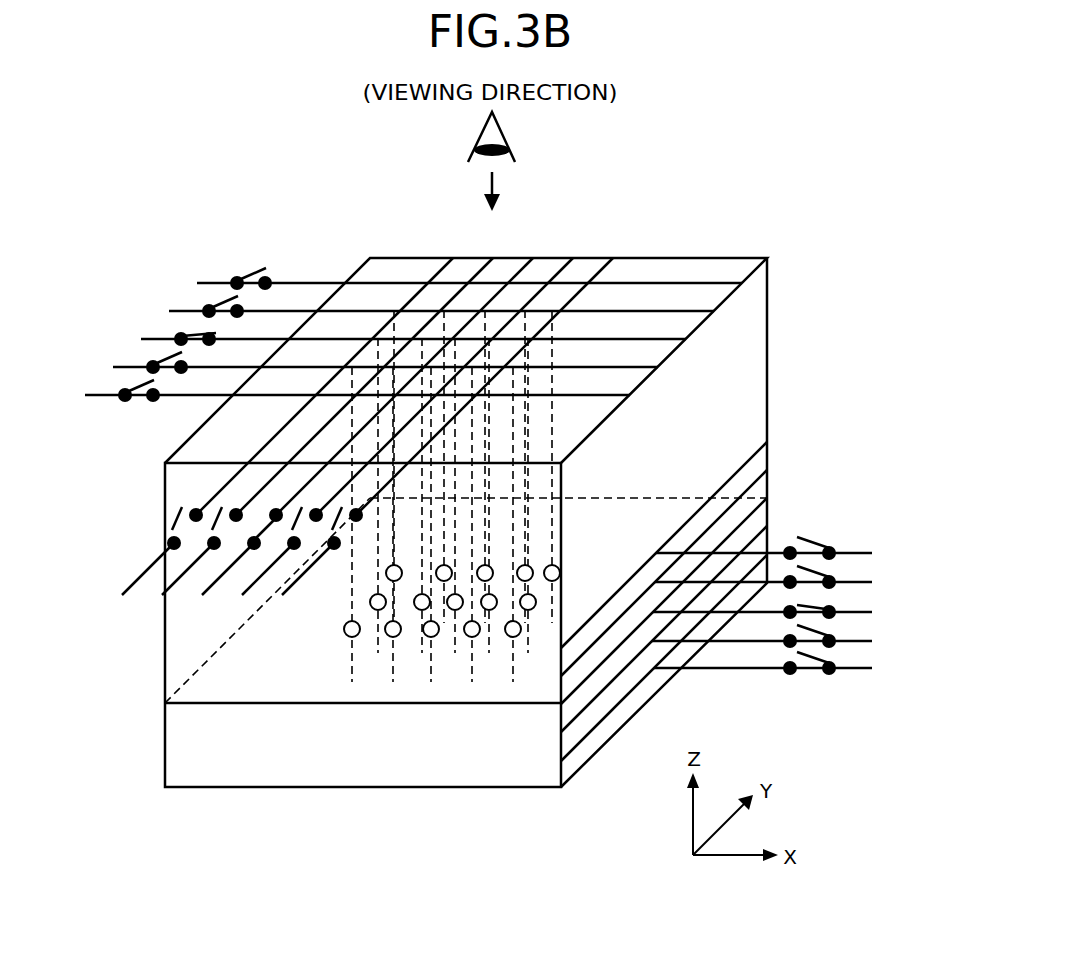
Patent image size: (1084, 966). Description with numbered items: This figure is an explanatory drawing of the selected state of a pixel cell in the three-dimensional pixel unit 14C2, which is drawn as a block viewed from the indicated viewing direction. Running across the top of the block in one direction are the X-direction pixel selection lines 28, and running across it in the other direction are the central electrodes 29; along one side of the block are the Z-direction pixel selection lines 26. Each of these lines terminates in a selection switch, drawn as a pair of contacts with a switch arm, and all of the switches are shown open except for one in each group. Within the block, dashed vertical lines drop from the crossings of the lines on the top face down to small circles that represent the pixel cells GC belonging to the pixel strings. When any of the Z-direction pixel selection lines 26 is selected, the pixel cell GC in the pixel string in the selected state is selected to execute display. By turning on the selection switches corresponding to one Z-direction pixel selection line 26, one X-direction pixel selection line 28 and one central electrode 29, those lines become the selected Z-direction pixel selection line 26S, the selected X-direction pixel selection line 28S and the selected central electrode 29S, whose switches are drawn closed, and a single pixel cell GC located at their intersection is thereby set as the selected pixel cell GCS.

The three-dimensional pixel unit 14C2 is at (714, 182).
The X-direction pixel selection line 28 is at (442, 272).
The selected X-direction pixel selection line 28S is at (202, 593).
The central electrode 29 is at (258, 269).
The selected central electrode 29S is at (193, 335).
The Z-direction pixel selection line 26 is at (834, 536).
The selected Z-direction pixel selection line 26S is at (834, 595).
The pixel cell GC is at (370, 603).
The selected pixel cell GCS is at (455, 611).